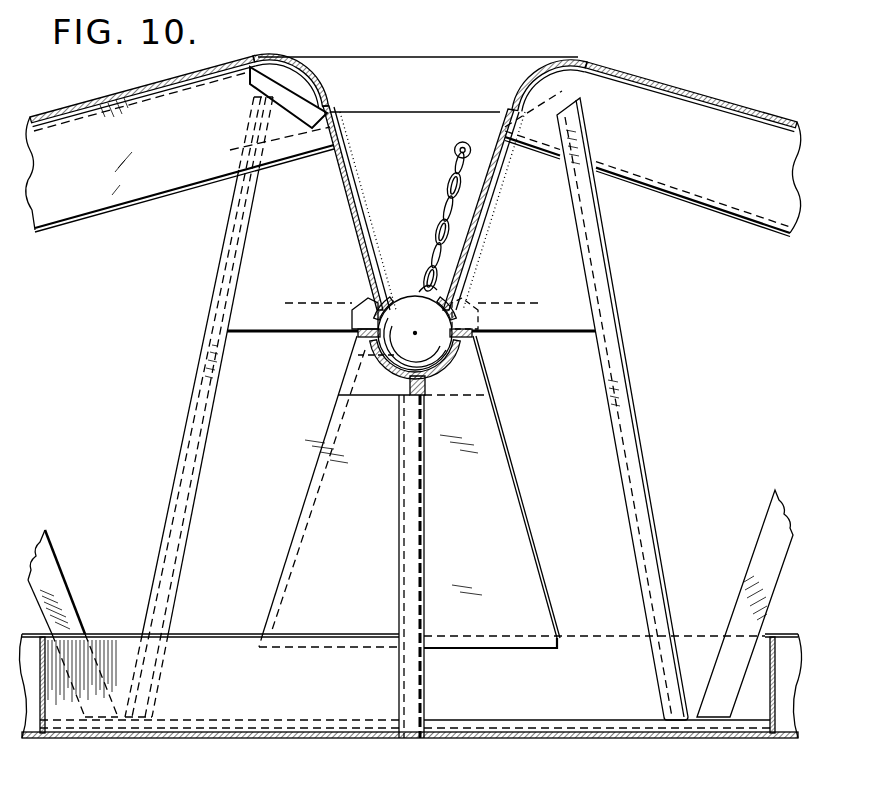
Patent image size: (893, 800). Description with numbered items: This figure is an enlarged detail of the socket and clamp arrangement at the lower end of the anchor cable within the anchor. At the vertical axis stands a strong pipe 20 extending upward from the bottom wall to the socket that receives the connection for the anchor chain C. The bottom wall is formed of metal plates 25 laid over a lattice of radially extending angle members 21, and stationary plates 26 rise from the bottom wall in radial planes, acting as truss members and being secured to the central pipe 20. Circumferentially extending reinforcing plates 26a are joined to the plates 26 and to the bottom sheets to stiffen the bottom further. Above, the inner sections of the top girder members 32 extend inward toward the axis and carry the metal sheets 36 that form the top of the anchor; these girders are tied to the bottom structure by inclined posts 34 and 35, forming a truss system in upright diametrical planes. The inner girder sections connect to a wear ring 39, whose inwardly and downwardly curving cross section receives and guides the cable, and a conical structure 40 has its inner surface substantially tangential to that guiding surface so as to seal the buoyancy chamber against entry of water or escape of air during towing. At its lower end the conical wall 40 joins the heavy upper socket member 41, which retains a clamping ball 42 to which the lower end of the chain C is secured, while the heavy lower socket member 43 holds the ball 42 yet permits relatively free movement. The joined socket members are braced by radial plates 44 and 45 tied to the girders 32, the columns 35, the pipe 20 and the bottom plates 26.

The pipe 20 is at (415, 547).
The angle members 21 is at (237, 728).
The metal plates 25 is at (173, 740).
The stationary plates 26 is at (208, 657).
The circumferentially extending reinforcing plates 26a is at (45, 665).
The top girder members 32 is at (103, 187).
The post 34 is at (55, 580).
The post 35 is at (200, 411).
The metal sheets 36 is at (68, 107).
The wear ring 39 is at (327, 83).
The conical structure 40 is at (388, 237).
The upper socket member 41 is at (362, 304).
The clamping ball 42 is at (428, 332).
The lower socket member 43 is at (383, 357).
The radial plates 44 is at (267, 320).
The radial plates 45 is at (338, 445).
The anchor chain C is at (460, 173).